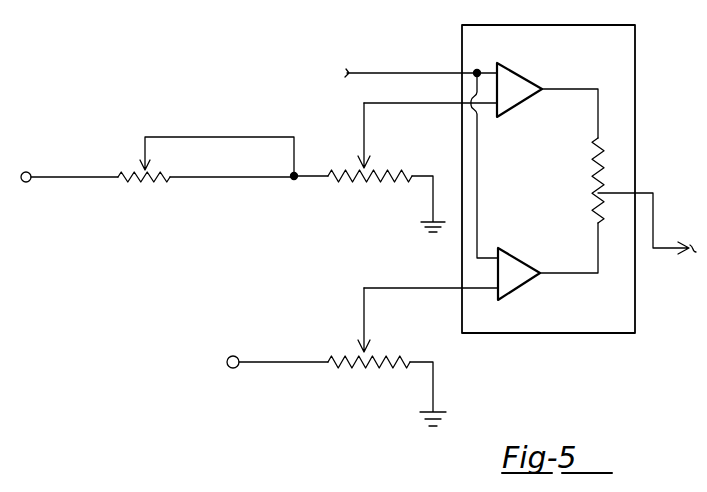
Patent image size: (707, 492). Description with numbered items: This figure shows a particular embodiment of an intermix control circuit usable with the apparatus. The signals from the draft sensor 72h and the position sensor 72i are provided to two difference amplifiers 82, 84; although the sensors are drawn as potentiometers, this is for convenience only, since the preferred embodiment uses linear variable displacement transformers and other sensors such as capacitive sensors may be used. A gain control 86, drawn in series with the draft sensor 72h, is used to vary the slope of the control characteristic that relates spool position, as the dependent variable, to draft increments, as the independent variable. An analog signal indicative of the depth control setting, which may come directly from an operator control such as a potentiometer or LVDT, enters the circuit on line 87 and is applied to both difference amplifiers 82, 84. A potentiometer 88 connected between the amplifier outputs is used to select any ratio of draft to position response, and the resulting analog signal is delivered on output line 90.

The gain control 86 is at (118, 170).
The line 87 is at (403, 46).
The difference amplifier 82 is at (543, 62).
The difference amplifier 84 is at (510, 252).
The potentiometer 88 is at (596, 186).
The output line 90 is at (690, 253).
The draft sensor 72h is at (418, 178).
The position sensor 72i is at (358, 346).